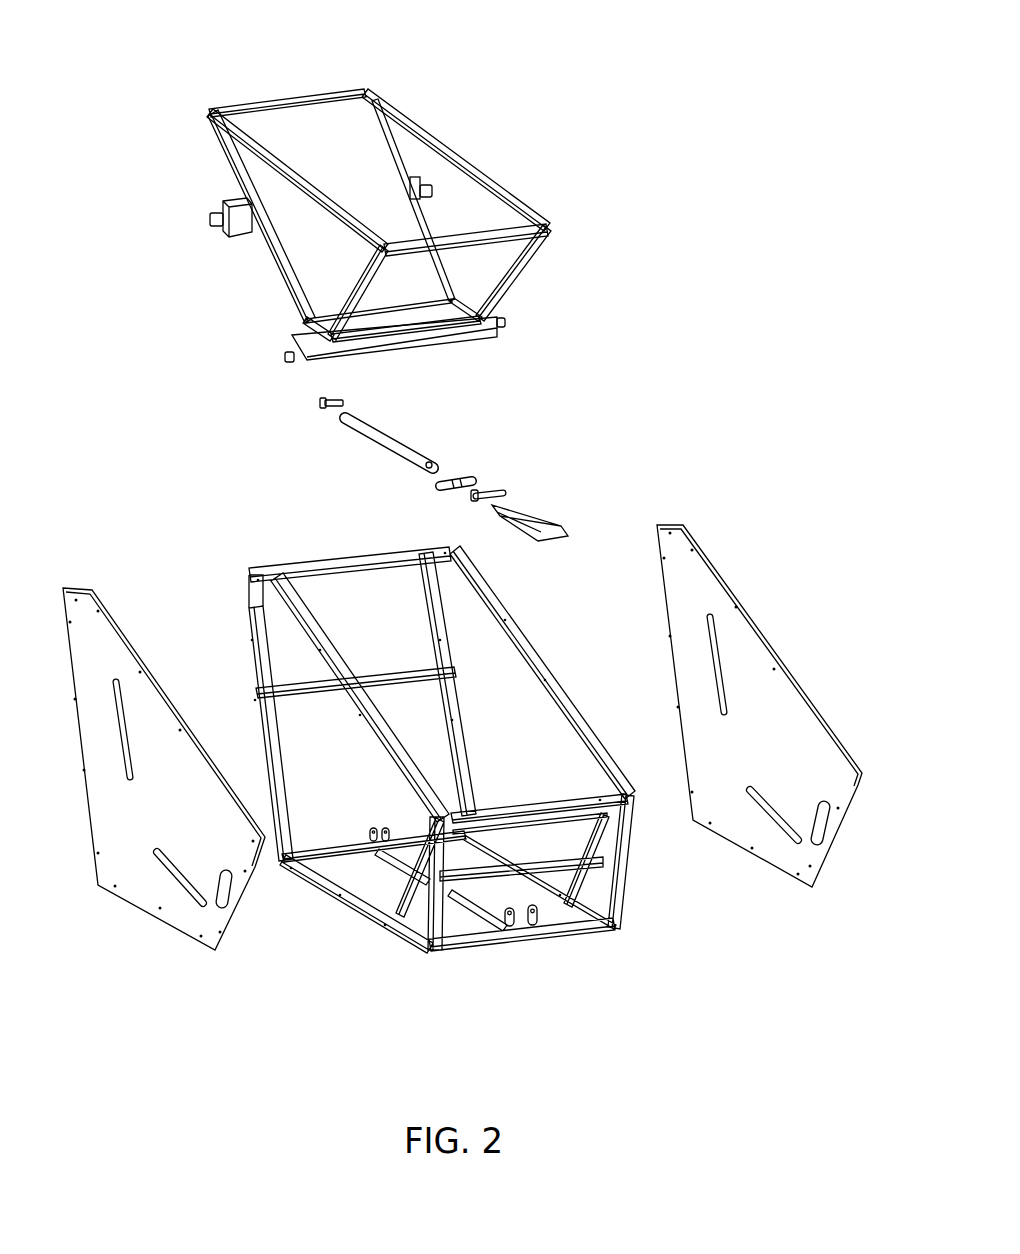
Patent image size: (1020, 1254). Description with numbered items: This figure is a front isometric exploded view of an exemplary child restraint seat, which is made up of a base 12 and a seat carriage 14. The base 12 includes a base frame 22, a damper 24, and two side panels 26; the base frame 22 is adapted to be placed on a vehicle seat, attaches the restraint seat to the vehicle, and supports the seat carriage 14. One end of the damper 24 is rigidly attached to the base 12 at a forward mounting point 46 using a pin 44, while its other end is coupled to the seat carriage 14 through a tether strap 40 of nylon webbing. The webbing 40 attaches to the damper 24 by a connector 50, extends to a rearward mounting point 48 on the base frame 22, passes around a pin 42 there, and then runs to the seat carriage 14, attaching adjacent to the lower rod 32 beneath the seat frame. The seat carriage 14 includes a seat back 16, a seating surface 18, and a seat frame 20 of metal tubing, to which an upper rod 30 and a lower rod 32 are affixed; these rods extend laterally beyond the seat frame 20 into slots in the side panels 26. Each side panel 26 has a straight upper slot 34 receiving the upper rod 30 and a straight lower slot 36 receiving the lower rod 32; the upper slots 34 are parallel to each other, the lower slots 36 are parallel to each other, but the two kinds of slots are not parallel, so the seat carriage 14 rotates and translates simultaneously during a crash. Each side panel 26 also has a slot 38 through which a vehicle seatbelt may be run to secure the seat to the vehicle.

The base 12 is at (208, 518).
The seat carriage 14 is at (528, 151).
The seat back 16 is at (332, 120).
The seating surface 18 is at (492, 226).
The seat frame 20 is at (528, 263).
The base frame 22 is at (577, 937).
The damper 24 is at (363, 437).
The side panels 26 is at (127, 903).
The upper rod 30 is at (210, 219).
The lower rod 32 is at (287, 347).
The upper slot 34 is at (122, 703).
The lower slot 36 is at (190, 897).
The slot 38 is at (227, 905).
The tether strap 40 is at (548, 540).
The pin 42 is at (505, 493).
The pin 44 is at (343, 402).
The mounting point 46 is at (373, 835).
The mounting point 48 is at (537, 925).
The connector 50 is at (475, 477).